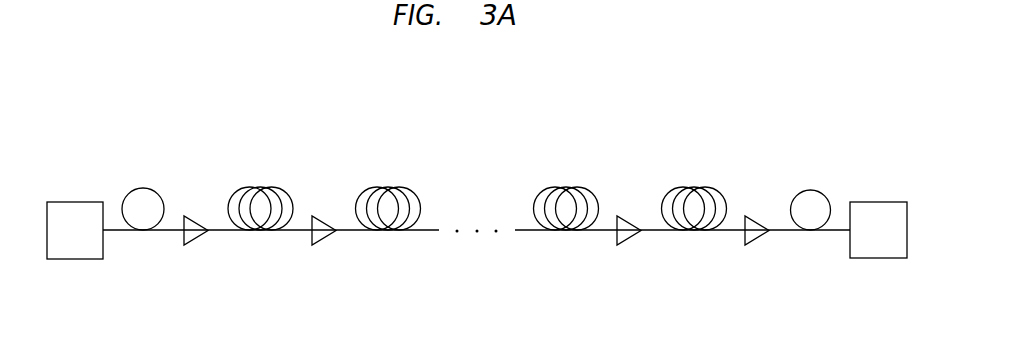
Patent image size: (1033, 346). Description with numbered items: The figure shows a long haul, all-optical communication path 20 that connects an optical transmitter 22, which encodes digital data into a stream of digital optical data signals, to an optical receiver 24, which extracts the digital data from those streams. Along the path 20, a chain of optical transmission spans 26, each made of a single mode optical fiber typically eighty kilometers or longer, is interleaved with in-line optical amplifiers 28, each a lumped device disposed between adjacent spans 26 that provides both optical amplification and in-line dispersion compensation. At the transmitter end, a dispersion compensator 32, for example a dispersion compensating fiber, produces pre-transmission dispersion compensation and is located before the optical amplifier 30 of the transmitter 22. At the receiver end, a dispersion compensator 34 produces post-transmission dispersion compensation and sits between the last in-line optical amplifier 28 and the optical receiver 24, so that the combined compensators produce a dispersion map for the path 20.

The optical communication path 20 is at (476, 146).
The optical transmitter 22 is at (83, 243).
The optical receiver 24 is at (888, 243).
The optical transmission span 26 is at (505, 186).
The in-line optical amplifier 28 is at (518, 247).
The optical amplifier of the transmitter 30 is at (173, 248).
The dispersion compensator 32 is at (173, 186).
The dispersion compensator 34 is at (843, 186).